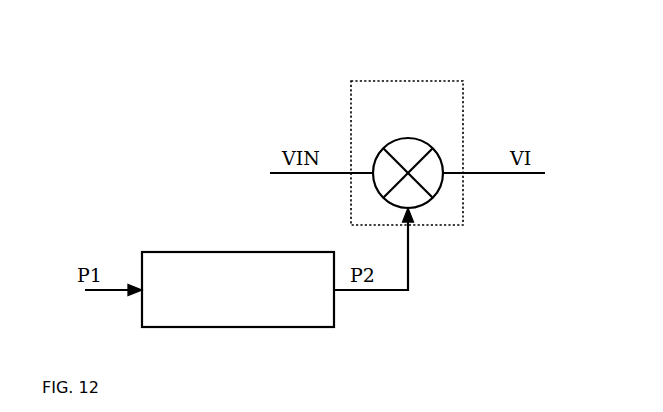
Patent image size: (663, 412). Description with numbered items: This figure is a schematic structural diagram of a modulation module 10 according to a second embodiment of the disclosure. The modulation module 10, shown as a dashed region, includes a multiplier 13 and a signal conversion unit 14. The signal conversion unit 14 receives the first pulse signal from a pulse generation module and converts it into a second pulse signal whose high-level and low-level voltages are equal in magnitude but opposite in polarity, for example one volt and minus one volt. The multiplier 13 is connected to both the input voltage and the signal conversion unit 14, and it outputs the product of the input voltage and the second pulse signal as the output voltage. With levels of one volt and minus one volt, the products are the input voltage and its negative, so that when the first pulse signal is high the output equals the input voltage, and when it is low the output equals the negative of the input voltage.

The modulation module 10 is at (405, 81).
The multiplier 13 is at (409, 138).
The signal conversion unit 14 is at (238, 289).